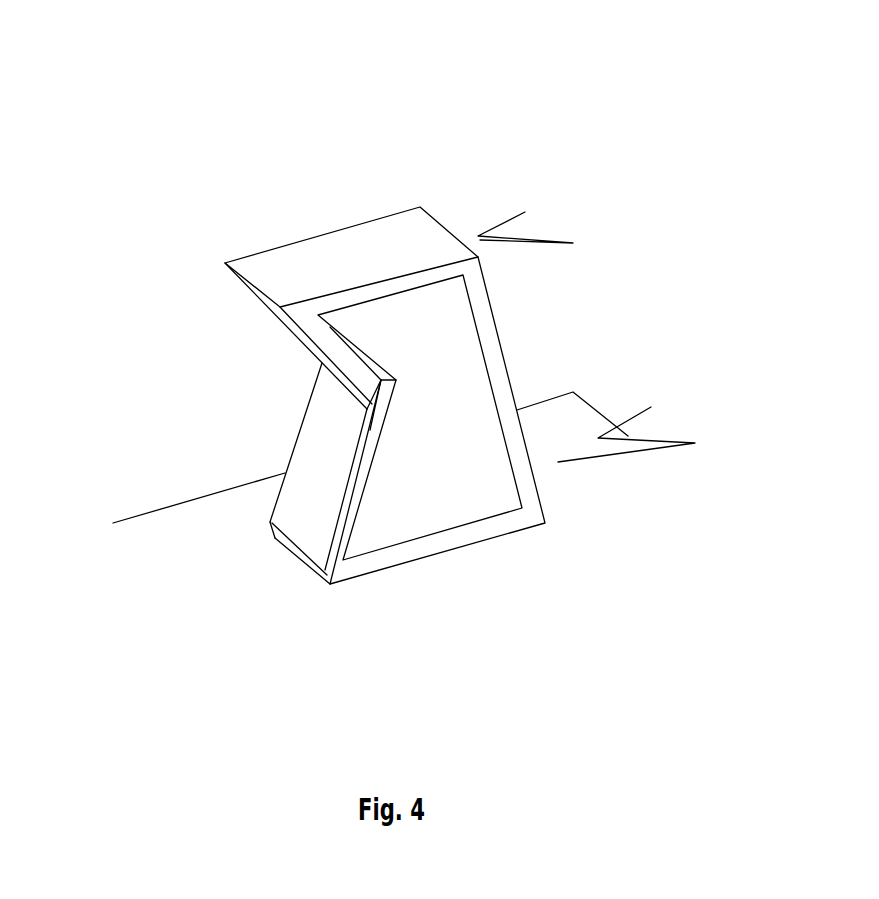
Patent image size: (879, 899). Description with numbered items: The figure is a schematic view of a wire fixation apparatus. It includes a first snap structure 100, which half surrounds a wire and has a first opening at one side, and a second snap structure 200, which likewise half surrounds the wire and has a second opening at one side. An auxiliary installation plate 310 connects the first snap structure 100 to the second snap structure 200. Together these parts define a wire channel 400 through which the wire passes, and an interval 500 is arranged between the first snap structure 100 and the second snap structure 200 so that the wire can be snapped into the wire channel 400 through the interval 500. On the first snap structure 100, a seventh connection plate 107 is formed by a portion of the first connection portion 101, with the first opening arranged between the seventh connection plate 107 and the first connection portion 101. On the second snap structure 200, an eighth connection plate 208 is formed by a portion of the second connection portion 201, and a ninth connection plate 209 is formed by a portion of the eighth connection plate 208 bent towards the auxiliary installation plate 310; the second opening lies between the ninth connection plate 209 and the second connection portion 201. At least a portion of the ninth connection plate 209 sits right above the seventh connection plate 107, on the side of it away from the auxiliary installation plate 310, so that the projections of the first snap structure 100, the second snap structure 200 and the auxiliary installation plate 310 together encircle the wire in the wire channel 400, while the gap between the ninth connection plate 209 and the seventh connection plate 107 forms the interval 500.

The first snap structure 100 is at (251, 565).
The first connection portion 101 is at (389, 548).
The seventh connection plate 107 is at (310, 507).
The second snap structure 200 is at (431, 203).
The second connection portion 201 is at (492, 388).
The eighth connection plate 208 is at (525, 210).
The ninth connection plate 209 is at (328, 360).
The auxiliary installation plate 310 is at (616, 425).
The wire channel 400 is at (388, 333).
The interval 500 is at (339, 403).